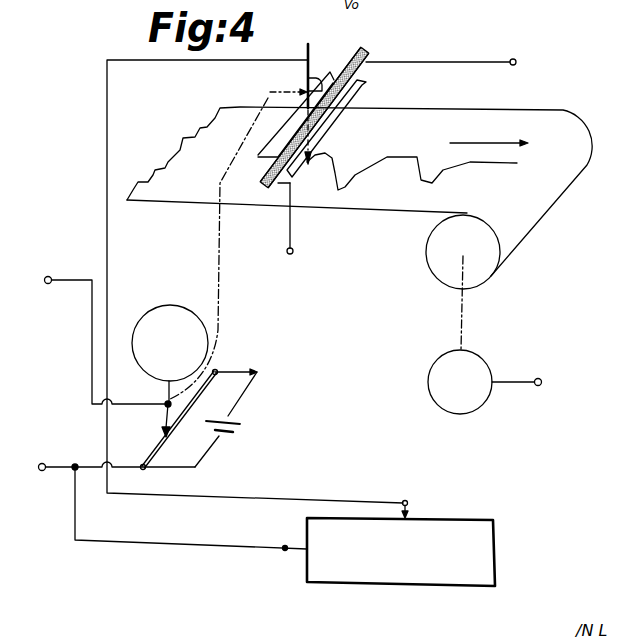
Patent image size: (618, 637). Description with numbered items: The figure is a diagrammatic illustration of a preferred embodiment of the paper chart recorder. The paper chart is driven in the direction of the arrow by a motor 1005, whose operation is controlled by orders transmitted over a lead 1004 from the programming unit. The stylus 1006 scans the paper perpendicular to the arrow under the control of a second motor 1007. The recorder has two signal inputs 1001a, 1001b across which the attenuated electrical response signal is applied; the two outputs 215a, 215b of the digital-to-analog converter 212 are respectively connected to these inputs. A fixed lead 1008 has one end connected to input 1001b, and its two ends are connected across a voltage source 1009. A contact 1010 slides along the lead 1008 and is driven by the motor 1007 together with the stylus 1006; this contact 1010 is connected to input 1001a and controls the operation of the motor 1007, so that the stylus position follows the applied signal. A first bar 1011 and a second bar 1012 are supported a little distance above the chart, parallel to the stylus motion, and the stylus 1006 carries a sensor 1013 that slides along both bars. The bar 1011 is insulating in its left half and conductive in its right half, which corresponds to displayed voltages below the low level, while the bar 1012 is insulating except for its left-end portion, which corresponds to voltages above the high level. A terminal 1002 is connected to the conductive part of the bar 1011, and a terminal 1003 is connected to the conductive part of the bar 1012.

The signal input 1001a is at (104, 326).
The signal input 1001b is at (112, 453).
The terminal 1002 is at (464, 69).
The terminal 1003 is at (311, 223).
The lead 1004 is at (538, 384).
The motor 1005 is at (440, 398).
The stylus 1006 is at (308, 74).
The motor 1007 is at (200, 327).
The fixed lead 1008 is at (160, 443).
The voltage source 1009 is at (234, 431).
The contact 1010 is at (165, 403).
The first bar 1011 is at (347, 56).
The second bar 1012 is at (365, 86).
The sensor 1013 is at (318, 76).
The digital-to-analog converter 212 is at (496, 558).
The converter output 215a is at (427, 500).
The converter output 215b is at (283, 549).